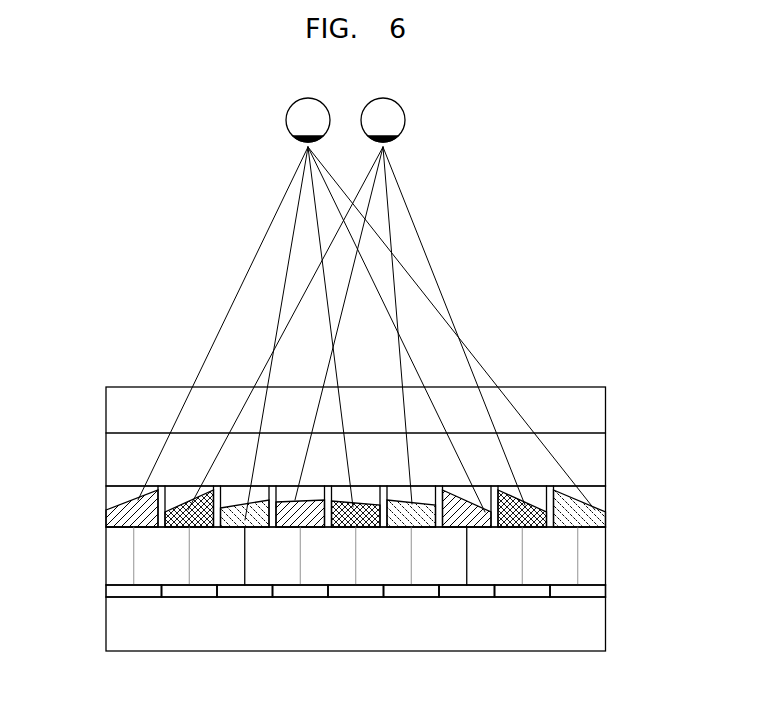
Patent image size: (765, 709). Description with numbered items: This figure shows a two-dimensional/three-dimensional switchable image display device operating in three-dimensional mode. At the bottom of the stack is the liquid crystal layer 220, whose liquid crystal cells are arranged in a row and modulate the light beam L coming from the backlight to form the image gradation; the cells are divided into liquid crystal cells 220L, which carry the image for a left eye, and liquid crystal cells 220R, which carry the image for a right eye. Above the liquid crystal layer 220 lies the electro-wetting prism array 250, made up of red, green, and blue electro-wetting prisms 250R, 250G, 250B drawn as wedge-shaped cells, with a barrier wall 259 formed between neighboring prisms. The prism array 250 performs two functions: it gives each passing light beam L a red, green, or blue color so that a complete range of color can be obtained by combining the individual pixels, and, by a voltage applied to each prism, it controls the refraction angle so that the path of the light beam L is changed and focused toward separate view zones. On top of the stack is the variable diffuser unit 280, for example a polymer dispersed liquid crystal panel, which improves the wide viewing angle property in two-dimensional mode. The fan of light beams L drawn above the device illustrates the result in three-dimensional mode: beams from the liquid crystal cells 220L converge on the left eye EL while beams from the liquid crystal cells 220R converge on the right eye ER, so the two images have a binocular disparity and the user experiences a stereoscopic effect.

The variable diffuser unit 280 is at (605, 410).
The electro-wetting prism array 250 is at (361, 578).
The red electro-wetting prism 250R is at (142, 498).
The green electro-wetting prism 250G is at (117, 514).
The blue electro-wetting prism 250B is at (210, 529).
The barrier wall 259 is at (273, 527).
The liquid crystal layer 220 is at (391, 612).
The liquid crystal cells for right eye 220R is at (122, 590).
The liquid crystal cells for left eye 220L is at (178, 590).
The light beam L is at (232, 298).
The right eye ER is at (296, 127).
The left eye EL is at (394, 127).